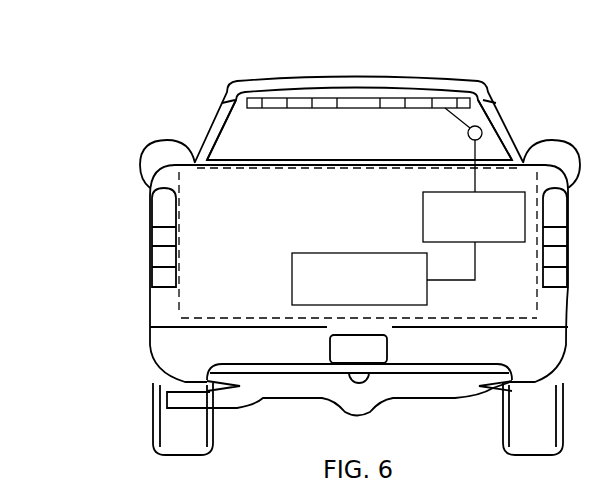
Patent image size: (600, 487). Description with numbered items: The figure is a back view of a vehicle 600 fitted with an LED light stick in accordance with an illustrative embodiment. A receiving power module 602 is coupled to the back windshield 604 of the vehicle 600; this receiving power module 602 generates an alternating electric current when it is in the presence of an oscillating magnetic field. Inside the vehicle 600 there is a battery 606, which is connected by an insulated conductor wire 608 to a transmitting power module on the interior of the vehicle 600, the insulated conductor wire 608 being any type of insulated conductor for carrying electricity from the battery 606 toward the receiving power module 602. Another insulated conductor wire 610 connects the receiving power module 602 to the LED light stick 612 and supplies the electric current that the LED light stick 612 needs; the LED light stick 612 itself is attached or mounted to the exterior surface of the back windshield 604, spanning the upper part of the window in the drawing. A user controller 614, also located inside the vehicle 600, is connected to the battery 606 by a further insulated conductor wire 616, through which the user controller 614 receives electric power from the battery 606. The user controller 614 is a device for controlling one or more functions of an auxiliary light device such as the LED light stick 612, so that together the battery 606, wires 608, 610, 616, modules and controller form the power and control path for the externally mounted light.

The vehicle 600 is at (110, 122).
The receiving power module 602 is at (485, 130).
The back windshield 604 is at (227, 132).
The battery 606 is at (493, 243).
The insulated conductor wire 608 is at (472, 178).
The insulated conductor wire 610 is at (452, 118).
The LED light stick 612 is at (358, 97).
The user controller 614 is at (292, 292).
The insulated conductor wire 616 is at (450, 283).